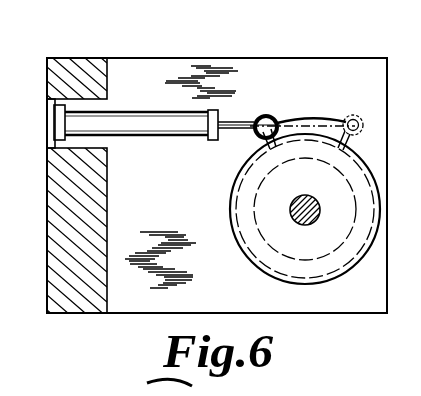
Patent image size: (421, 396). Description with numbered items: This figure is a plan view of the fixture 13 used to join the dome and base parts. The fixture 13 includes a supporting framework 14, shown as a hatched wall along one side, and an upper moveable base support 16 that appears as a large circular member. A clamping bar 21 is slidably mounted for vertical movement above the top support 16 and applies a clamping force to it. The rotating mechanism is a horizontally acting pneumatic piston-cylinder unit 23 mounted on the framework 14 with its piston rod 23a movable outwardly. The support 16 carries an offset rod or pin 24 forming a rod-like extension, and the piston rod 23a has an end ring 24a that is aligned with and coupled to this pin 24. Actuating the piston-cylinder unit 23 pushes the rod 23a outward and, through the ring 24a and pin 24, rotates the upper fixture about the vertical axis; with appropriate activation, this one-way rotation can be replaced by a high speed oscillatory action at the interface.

The fixture 13 is at (350, 314).
The supporting framework 14 is at (53, 71).
The upper moveable base support 16 is at (238, 188).
The clamping bar 21 is at (253, 262).
The pneumatic piston-cylinder unit 23 is at (124, 111).
The piston rod 23a is at (234, 122).
The offset rod or pin 24 is at (263, 140).
The end ring 24a is at (268, 130).